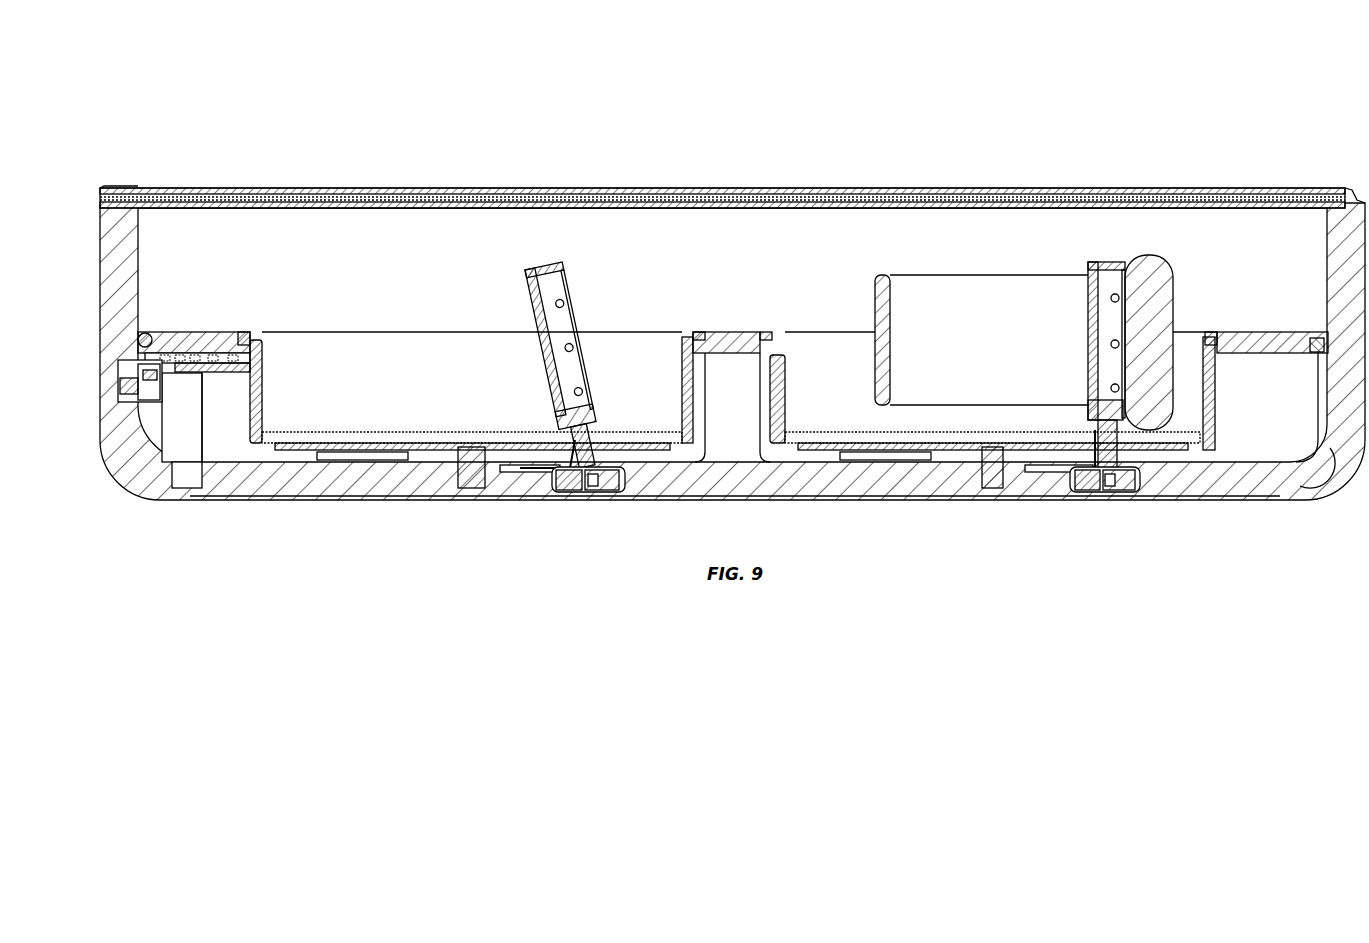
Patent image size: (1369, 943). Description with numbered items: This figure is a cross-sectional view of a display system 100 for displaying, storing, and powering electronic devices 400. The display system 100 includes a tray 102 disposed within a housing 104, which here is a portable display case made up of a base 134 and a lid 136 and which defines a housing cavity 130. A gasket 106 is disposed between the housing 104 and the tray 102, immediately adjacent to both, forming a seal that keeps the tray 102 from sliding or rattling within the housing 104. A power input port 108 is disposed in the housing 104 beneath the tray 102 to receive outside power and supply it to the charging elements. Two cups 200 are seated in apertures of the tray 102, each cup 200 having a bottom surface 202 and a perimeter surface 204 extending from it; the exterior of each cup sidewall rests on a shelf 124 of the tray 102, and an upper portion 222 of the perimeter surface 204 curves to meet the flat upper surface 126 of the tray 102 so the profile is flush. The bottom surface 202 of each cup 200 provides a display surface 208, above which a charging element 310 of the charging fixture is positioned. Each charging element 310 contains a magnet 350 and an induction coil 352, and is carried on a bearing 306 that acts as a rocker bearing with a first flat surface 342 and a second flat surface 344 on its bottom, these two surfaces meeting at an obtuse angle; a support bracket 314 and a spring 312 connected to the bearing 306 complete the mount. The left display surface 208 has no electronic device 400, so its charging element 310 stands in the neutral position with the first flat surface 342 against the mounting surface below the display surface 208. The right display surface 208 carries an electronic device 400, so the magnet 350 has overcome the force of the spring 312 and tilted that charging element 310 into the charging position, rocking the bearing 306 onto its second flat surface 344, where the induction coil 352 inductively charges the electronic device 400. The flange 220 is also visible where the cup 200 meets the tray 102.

The display system 100 is at (410, 78).
The tray 102 is at (188, 332).
The housing 104 is at (1330, 240).
The gasket 106 is at (147, 334).
The power input port 108 is at (168, 376).
The shelf 124 is at (240, 353).
The upper surface 126 is at (255, 350).
The housing cavity 130 is at (1283, 492).
The base 134 is at (1350, 478).
The lid 136 is at (1290, 188).
The cup 200 is at (365, 330).
The bottom surface 202 is at (375, 450).
The perimeter surface 204 is at (262, 380).
The display surface 208 is at (1035, 472).
The flange 220 is at (244, 332).
The upper portion 222 is at (252, 340).
The bearing 306 is at (1140, 478).
The charging element 310 is at (1064, 285).
The spring 312 is at (1098, 440).
The support bracket 314 is at (1150, 462).
The first flat surface 342 is at (1080, 486).
The second flat surface 344 is at (1125, 488).
The magnet 350 is at (1105, 345).
The induction coil 352 is at (1110, 298).
The electronic device 400 is at (1160, 258).